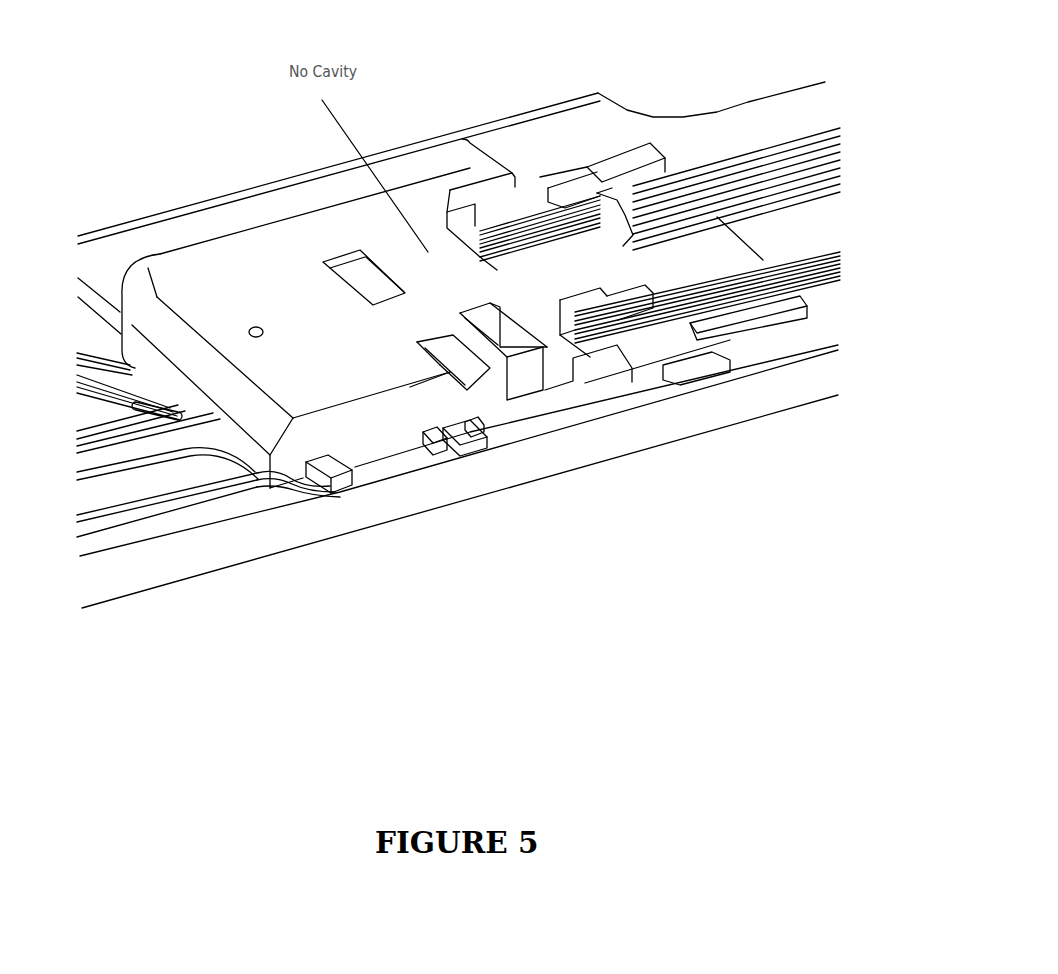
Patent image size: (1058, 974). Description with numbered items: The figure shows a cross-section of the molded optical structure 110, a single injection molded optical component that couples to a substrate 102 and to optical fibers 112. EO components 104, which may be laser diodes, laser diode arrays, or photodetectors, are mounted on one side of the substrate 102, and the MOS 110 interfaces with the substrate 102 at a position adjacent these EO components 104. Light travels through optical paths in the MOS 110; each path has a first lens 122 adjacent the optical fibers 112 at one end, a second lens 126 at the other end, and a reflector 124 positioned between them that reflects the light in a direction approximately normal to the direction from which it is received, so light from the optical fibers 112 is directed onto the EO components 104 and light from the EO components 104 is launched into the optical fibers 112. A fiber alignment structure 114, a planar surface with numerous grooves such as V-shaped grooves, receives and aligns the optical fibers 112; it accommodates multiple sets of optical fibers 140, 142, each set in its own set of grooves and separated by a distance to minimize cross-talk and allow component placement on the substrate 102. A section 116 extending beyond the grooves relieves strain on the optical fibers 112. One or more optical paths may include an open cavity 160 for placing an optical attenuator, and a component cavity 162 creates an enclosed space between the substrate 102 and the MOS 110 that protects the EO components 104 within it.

The molded optical structure 110 is at (157, 262).
The section 116 is at (783, 285).
The reflector 124 is at (372, 282).
The component cavity 162 is at (447, 375).
The open cavity 160 is at (520, 385).
The substrate 102 is at (433, 440).
The second lens 126 is at (458, 437).
The EO components 104 is at (477, 435).
The fiber alignment structure 114 is at (588, 170).
The set of optical fibers 140 is at (632, 262).
The first lens 122 is at (570, 345).
The optical fibers 112 is at (640, 290).
The set of optical fibers 142 is at (740, 290).